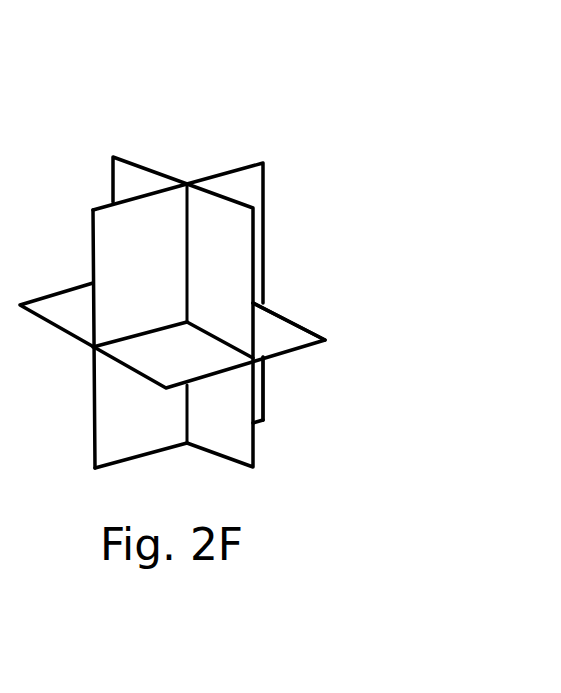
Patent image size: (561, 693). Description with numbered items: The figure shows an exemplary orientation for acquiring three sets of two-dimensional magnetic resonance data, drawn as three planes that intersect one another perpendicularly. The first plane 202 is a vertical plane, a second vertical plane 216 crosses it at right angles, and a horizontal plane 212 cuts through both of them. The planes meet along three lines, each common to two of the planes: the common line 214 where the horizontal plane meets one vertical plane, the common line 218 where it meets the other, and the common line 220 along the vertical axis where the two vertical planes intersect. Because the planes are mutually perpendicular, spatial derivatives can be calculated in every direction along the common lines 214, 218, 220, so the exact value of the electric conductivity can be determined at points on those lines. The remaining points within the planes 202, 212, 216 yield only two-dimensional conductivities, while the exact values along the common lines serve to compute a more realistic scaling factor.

The first plane 202 is at (233, 167).
The plane 216 is at (138, 160).
The common line 214 is at (133, 338).
The plane 212 is at (300, 322).
The common line 218 is at (242, 357).
The common line 220 is at (183, 220).